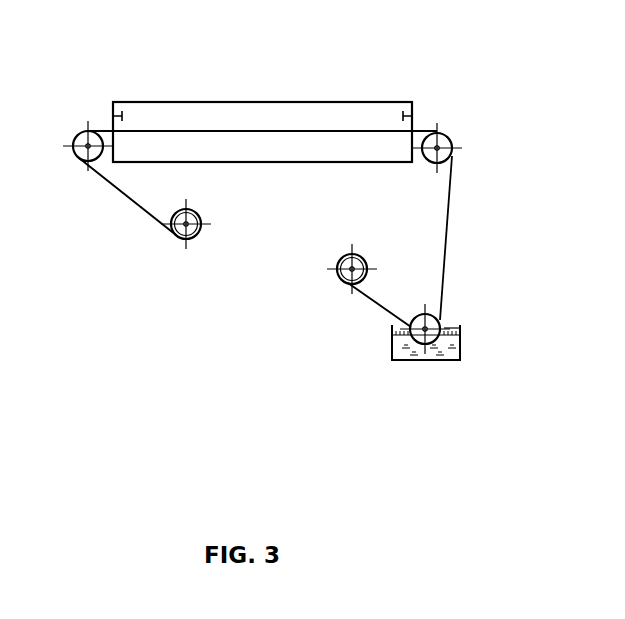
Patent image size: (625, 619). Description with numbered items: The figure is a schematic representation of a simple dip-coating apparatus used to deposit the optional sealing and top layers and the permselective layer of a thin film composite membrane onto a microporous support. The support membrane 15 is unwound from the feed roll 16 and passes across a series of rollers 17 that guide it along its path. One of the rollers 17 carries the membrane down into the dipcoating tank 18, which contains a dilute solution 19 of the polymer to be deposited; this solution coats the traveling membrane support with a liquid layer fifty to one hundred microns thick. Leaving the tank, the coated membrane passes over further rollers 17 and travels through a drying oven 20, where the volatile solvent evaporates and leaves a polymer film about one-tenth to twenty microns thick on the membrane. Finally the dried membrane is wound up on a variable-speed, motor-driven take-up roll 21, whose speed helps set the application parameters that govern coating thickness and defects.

The support membrane 15 is at (364, 307).
The feed roll 16 is at (338, 257).
The rollers 17 is at (75, 127).
The dipcoating tank 18 is at (404, 356).
The dilute solution 19 is at (454, 327).
The drying oven 20 is at (288, 116).
The take-up roll 21 is at (176, 241).